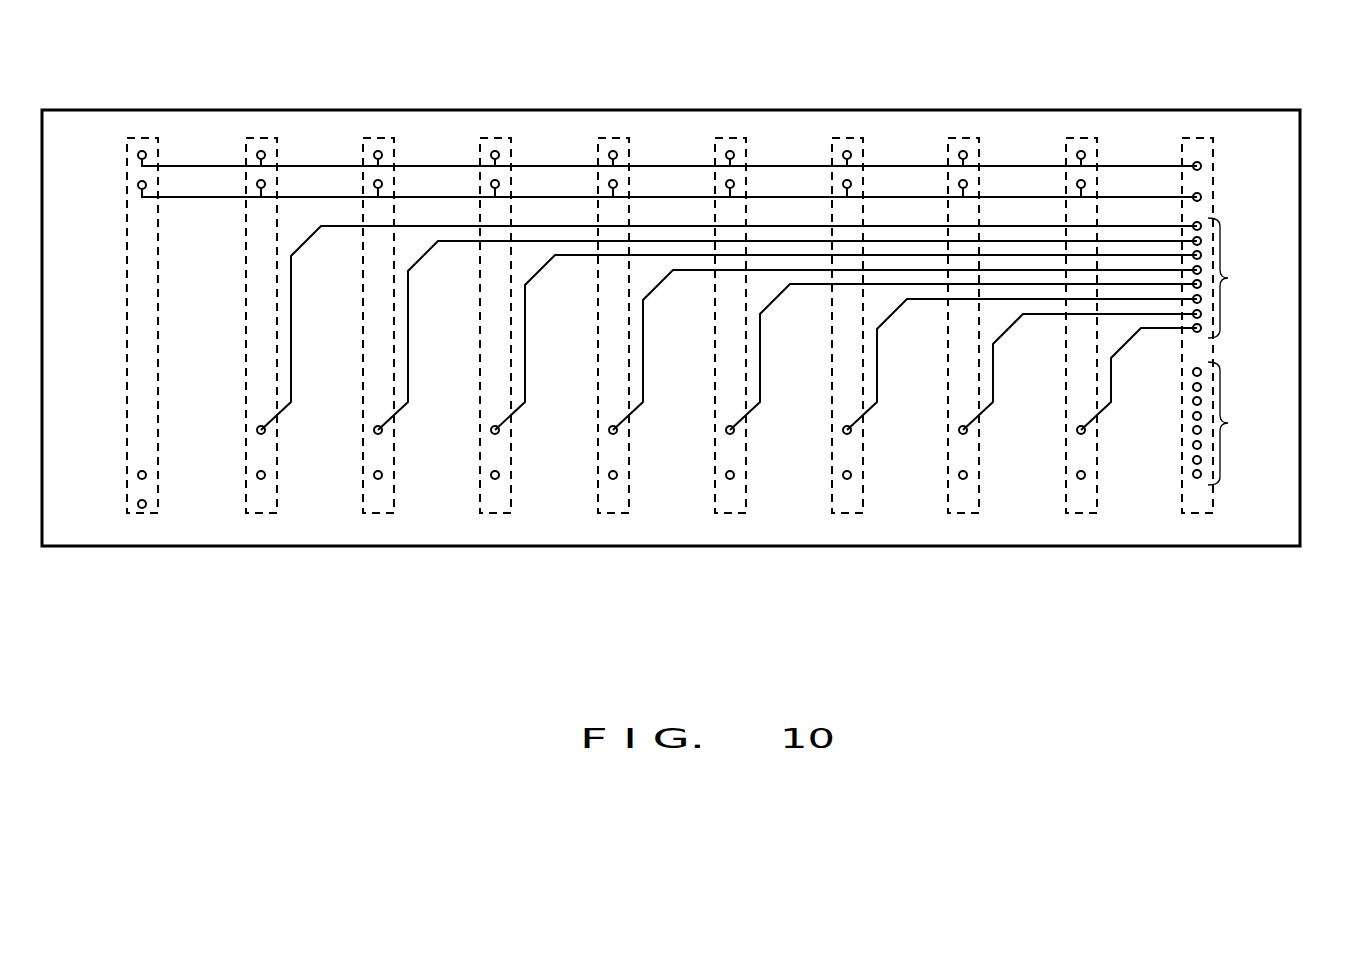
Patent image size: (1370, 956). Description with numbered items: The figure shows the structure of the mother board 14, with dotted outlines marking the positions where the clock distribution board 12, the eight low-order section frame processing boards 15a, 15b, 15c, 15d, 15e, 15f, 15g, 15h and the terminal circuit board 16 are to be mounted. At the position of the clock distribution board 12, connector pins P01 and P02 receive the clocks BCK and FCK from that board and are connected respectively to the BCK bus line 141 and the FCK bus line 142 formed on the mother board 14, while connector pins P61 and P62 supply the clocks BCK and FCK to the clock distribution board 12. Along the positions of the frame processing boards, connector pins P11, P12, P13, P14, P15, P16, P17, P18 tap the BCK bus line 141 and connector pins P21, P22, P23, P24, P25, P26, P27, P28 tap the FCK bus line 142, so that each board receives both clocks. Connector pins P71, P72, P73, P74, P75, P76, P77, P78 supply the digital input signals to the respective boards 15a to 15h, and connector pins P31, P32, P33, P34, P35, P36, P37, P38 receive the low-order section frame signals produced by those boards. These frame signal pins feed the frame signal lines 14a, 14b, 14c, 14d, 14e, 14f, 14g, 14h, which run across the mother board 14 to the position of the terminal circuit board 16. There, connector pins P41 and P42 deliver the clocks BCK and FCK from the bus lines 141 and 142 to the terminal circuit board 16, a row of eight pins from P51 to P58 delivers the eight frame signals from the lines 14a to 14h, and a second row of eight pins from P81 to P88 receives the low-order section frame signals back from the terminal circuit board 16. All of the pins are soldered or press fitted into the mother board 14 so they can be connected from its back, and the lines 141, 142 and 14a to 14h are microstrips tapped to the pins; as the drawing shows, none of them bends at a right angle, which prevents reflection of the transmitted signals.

The mother board 14 is at (1300, 330).
The clock distribution board 12 is at (142, 513).
The low-order section frame processing board 15a is at (261, 513).
The low-order section frame processing board 15b is at (378, 513).
The low-order section frame processing board 15c is at (495, 513).
The low-order section frame processing board 15d is at (613, 513).
The low-order section frame processing board 15e is at (730, 513).
The low-order section frame processing board 15f is at (847, 513).
The low-order section frame processing board 15g is at (963, 513).
The low-order section frame processing board 15h is at (1081, 513).
The terminal circuit board 16 is at (1197, 513).
The BCK bus line 141 is at (193, 167).
The FCK bus line 142 is at (221, 198).
The frame signal line 14a is at (325, 227).
The frame signal line 14b is at (442, 242).
The frame signal line 14c is at (559, 256).
The frame signal line 14d is at (677, 271).
The frame signal line 14e is at (794, 285).
The frame signal line 14f is at (911, 300).
The frame signal line 14g is at (1027, 315).
The frame signal line 14h is at (1145, 329).
The connector pin P01 is at (138, 155).
The connector pin P02 is at (138, 185).
The connector pin P61 is at (138, 475).
The connector pin P62 is at (138, 504).
The connector pin P11 is at (256, 152).
The connector pin P12 is at (373, 152).
The connector pin P13 is at (490, 152).
The connector pin P14 is at (608, 152).
The connector pin P15 is at (725, 152).
The connector pin P16 is at (842, 152).
The connector pin P17 is at (958, 152).
The connector pin P18 is at (1076, 152).
The connector pin P21 is at (266, 184).
The connector pin P22 is at (383, 184).
The connector pin P23 is at (500, 184).
The connector pin P24 is at (618, 184).
The connector pin P25 is at (735, 184).
The connector pin P26 is at (852, 184).
The connector pin P27 is at (968, 184).
The connector pin P28 is at (1086, 184).
The connector pin P31 is at (255, 430).
The connector pin P32 is at (372, 430).
The connector pin P33 is at (489, 430).
The connector pin P34 is at (607, 430).
The connector pin P35 is at (724, 430).
The connector pin P36 is at (841, 430).
The connector pin P37 is at (957, 430).
The connector pin P38 is at (1075, 430).
The connector pin P71 is at (255, 475).
The connector pin P72 is at (372, 475).
The connector pin P73 is at (489, 475).
The connector pin P74 is at (607, 475).
The connector pin P75 is at (724, 475).
The connector pin P76 is at (841, 475).
The connector pin P77 is at (957, 475).
The connector pin P78 is at (1075, 475).
The connector pin P41 is at (1201, 163).
The connector pin P42 is at (1201, 195).
The connector pin P51 is at (1240, 278).
The connector pin P58 is at (1253, 258).
The connector pin P81 is at (1240, 423).
The connector pin P88 is at (1253, 408).